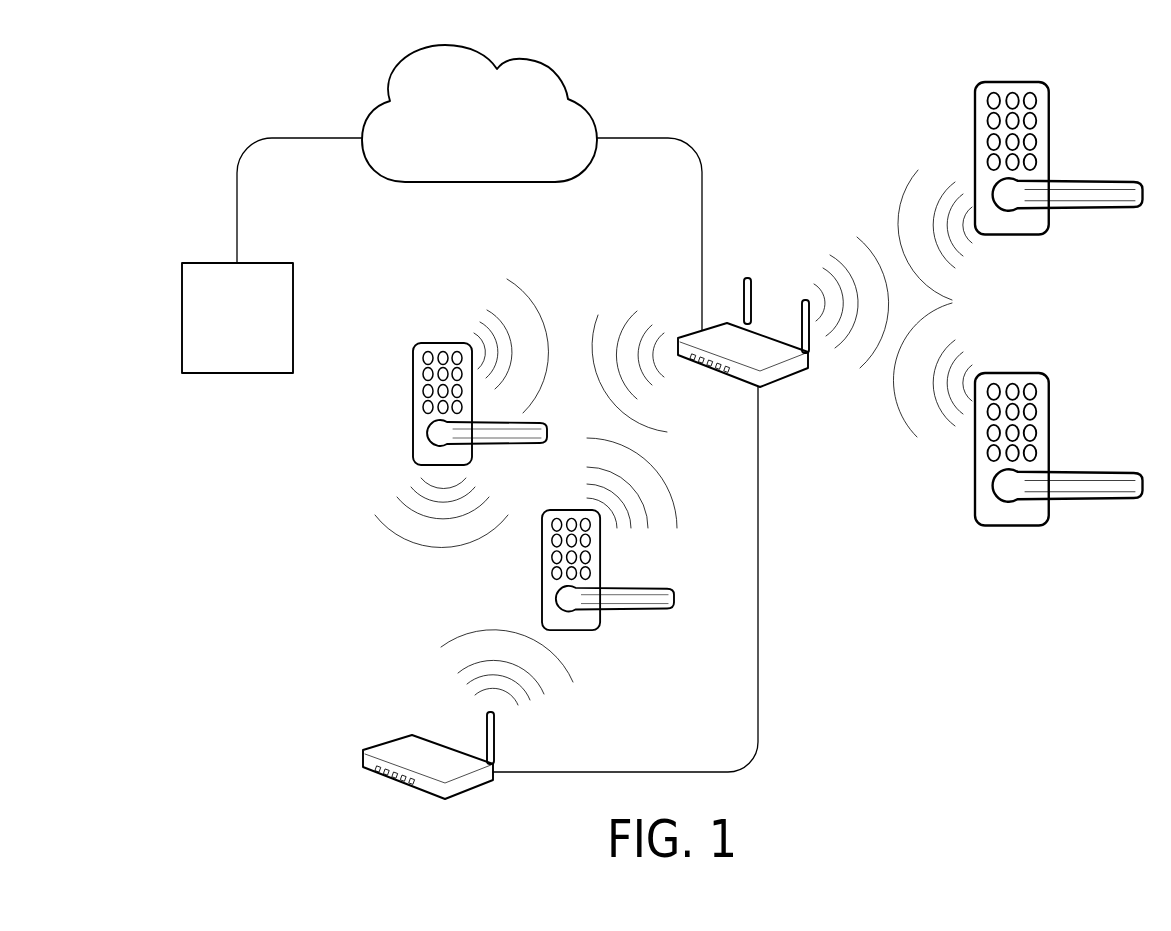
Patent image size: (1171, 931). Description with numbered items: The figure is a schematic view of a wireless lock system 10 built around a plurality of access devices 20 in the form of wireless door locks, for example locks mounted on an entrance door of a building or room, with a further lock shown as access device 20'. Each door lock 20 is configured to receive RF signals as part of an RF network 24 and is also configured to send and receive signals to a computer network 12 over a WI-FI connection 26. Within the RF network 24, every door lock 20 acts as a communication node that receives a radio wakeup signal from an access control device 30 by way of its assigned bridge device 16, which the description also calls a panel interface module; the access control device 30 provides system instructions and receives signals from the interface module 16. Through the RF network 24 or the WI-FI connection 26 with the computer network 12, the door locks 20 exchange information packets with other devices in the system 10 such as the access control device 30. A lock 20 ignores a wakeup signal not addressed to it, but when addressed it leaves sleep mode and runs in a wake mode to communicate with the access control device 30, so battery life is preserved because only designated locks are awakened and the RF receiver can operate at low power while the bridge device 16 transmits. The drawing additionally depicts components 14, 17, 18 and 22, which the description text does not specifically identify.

The access control system 10 is at (190, 107).
The local area network (LAN) 12 is at (574, 98).
The wireless router / access point 14 is at (784, 380).
The second wireless router / gateway 16 is at (363, 757).
The antenna 17 is at (487, 722).
The wired connection 18 is at (758, 576).
The electronic lock 20 is at (508, 486).
The remote electronic lock 20' is at (1059, 304).
The wireless signal from router 22 is at (890, 250).
The wireless signal from second router 24 is at (562, 686).
The wireless signal between lock and router 26 is at (570, 339).
The server / access control host 30 is at (253, 332).